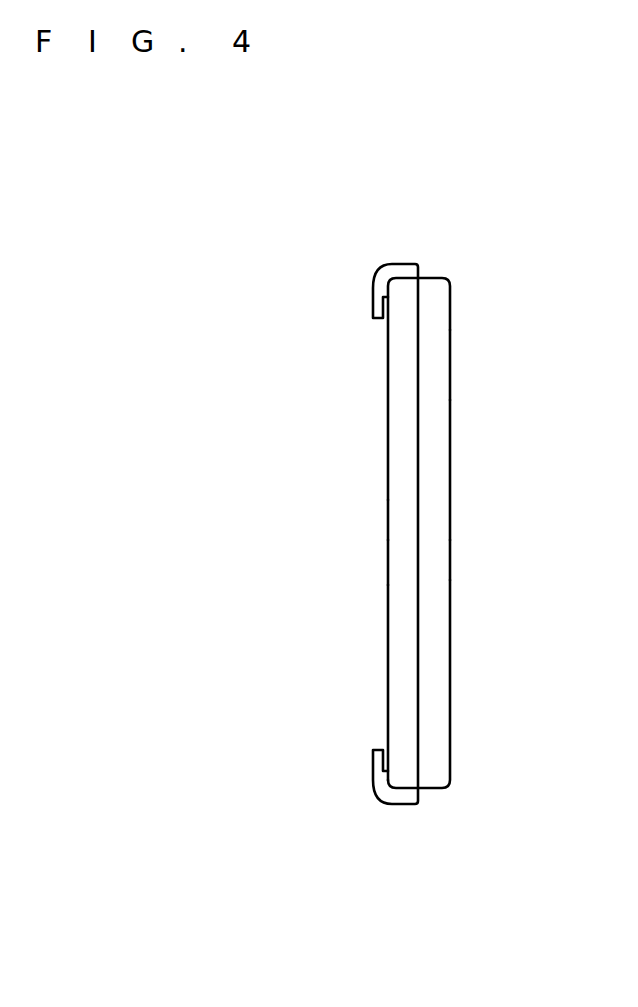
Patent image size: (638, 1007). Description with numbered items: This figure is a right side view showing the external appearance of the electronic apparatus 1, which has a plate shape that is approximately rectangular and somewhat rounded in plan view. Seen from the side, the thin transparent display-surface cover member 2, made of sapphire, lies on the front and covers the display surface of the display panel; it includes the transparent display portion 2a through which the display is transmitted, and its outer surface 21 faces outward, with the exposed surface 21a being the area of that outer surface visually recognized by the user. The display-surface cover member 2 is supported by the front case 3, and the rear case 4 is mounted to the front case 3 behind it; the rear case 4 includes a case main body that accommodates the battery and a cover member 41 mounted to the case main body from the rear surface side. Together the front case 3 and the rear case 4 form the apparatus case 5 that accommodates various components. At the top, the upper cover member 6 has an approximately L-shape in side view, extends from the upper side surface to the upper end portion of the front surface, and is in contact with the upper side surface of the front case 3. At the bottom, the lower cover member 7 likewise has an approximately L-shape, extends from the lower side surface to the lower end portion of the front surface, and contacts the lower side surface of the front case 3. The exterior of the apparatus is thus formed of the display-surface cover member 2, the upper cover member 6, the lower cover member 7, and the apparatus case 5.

The electronic apparatus 1 is at (447, 247).
The display-surface cover member 2 is at (389, 428).
The display portion 2a is at (388, 517).
The outer surface 21 is at (388, 561).
The exposed surface 21a is at (388, 608).
The front case 3 is at (403, 419).
The rear case 4 is at (437, 493).
The cover member 41 is at (437, 559).
The apparatus case 5 is at (457, 359).
The upper cover member 6 is at (391, 274).
The lower cover member 7 is at (398, 806).